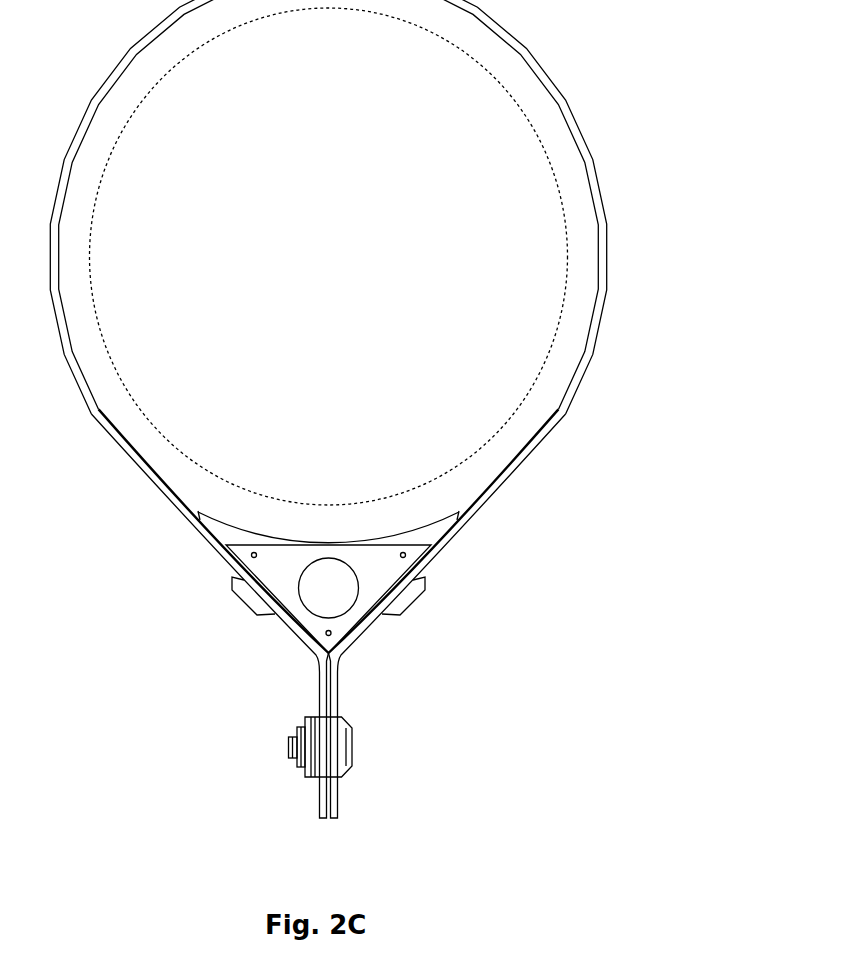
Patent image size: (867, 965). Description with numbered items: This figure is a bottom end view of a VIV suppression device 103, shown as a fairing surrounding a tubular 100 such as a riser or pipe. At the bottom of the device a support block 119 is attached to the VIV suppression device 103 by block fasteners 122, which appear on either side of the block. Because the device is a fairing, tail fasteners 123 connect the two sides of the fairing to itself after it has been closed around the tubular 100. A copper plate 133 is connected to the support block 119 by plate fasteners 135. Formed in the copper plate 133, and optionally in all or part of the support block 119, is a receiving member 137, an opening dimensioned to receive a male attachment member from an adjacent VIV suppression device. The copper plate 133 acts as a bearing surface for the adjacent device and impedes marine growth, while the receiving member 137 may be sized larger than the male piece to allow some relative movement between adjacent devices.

The tubular 100 is at (563, 188).
The VIV suppression device 103 is at (585, 382).
The support block 119 is at (438, 525).
The block fasteners 122 is at (232, 599).
The tail fasteners 123 is at (355, 746).
The copper plate 133 is at (298, 615).
The plate fasteners 135 is at (245, 552).
The receiving member 137 is at (315, 622).